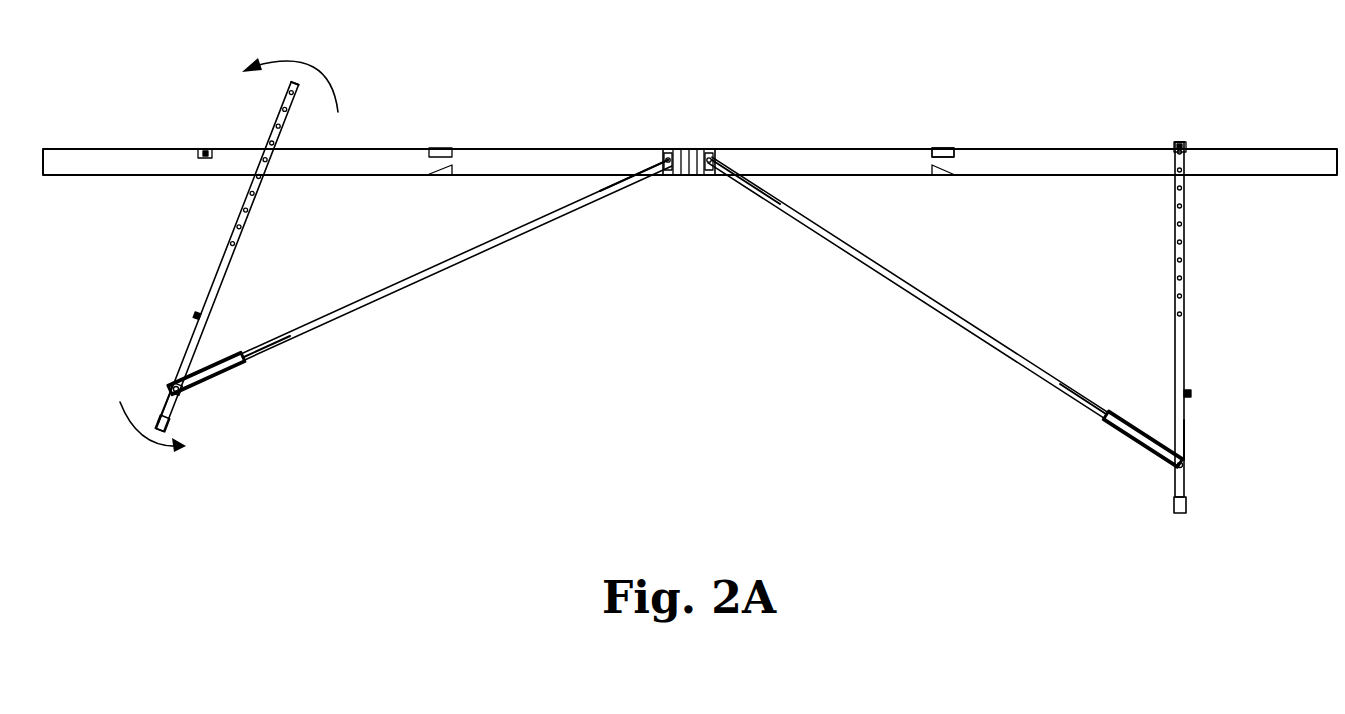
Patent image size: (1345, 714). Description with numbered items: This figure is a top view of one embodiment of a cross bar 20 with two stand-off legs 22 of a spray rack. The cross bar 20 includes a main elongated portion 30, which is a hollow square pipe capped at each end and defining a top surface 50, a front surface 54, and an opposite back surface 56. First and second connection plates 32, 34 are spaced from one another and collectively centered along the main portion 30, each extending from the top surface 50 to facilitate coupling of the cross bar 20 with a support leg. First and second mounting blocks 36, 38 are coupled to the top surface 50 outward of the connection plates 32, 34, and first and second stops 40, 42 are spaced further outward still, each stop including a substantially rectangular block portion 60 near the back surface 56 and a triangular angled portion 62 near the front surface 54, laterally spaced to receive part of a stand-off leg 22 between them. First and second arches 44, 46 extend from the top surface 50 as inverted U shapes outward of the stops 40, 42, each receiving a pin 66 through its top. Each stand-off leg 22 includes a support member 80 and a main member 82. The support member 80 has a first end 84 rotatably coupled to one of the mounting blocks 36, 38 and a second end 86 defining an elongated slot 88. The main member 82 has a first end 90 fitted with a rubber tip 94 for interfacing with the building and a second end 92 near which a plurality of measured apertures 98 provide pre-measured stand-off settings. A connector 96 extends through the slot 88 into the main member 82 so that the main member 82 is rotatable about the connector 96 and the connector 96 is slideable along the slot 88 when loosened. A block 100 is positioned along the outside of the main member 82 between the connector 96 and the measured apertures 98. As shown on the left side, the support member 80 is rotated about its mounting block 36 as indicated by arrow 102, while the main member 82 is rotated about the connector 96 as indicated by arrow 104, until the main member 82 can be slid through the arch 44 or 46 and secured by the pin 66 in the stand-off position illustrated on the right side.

The cross bar 20 is at (868, 146).
The stand-off leg 22 is at (683, 313).
The main elongated portion 30 is at (553, 158).
The first connection plate 32 is at (694, 142).
The second connection plate 34 is at (690, 176).
The first mounting block 36 is at (667, 150).
The second mounting block 38 is at (712, 150).
The first stop 40 is at (707, 100).
The second stop 42 is at (940, 145).
The first arch 44 is at (666, 123).
The second arch 46 is at (1188, 152).
The top surface 50 is at (386, 158).
The front surface 54 is at (376, 176).
The back surface 56 is at (505, 153).
The block portion 60 is at (445, 150).
The angled portion 62 is at (448, 176).
The pin 66 is at (205, 149).
The support member 80 is at (675, 322).
The main member 82 is at (683, 313).
The first end 84 is at (636, 180).
The second end 86 is at (255, 352).
The elongated slot 88 is at (215, 372).
The first end 90 is at (164, 406).
The second end 92 is at (297, 98).
The rubber tip 94 is at (168, 424).
The connector 96 is at (172, 386).
The measured apertures 98 is at (234, 225).
The block 100 is at (194, 316).
The arrow 102 is at (131, 430).
The arrow 104 is at (306, 62).